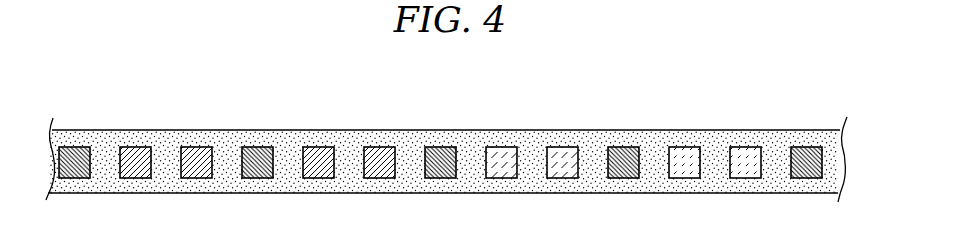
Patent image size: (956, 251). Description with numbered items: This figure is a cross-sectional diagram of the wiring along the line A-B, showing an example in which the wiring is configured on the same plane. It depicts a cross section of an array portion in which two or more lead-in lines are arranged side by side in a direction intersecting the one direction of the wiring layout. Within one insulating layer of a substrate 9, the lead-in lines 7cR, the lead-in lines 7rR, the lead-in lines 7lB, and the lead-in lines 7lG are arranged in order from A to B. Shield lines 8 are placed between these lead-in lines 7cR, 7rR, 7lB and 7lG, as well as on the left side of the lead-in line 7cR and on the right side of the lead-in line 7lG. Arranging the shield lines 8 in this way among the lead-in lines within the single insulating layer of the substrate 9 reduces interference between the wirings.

The shield line 8 is at (78, 147).
The lead-in line 7cR is at (137, 147).
The lead-in line 7rR is at (320, 147).
The lead-in line 7lB is at (502, 147).
The lead-in line 7lG is at (686, 147).
The substrate 9 is at (772, 146).